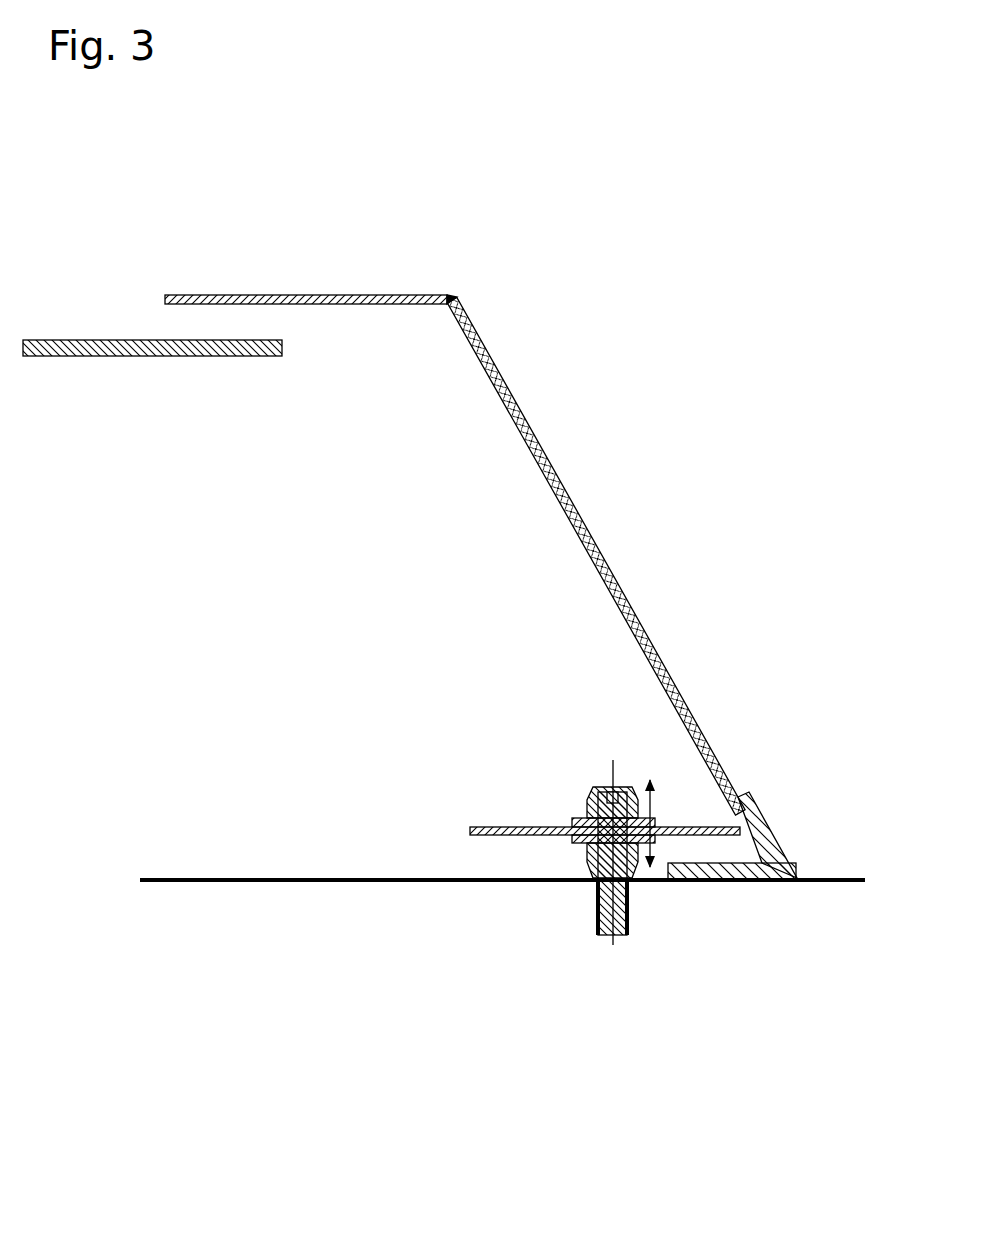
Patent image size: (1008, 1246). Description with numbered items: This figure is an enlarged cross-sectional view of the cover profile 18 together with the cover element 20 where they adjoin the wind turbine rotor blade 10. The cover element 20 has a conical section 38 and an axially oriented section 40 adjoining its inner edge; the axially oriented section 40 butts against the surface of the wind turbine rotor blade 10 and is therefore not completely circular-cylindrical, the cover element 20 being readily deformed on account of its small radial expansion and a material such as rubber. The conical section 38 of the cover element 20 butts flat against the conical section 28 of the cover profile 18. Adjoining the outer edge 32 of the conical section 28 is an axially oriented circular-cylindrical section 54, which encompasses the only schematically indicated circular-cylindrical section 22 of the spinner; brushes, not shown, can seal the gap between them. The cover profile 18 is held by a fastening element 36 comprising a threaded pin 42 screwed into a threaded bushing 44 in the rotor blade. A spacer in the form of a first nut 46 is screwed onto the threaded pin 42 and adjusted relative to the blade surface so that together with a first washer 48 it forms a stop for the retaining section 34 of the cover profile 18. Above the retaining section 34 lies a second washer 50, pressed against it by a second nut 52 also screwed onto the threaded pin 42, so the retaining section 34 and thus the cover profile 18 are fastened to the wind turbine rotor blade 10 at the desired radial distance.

The wind turbine rotor blade 10 is at (362, 928).
The cover profile 18 is at (464, 477).
The cover element 20 is at (770, 831).
The circular-cylindrical section of the spinner 22 is at (113, 356).
The conical section of the cover profile 28 is at (607, 570).
The outer edge 32 is at (447, 293).
The retaining section 34 is at (502, 826).
The fastening element 36 is at (559, 849).
The conical section of the cover element 38 is at (763, 811).
The axially oriented section 40 is at (733, 882).
The threaded pin 42 is at (608, 772).
The threaded bushing 44 is at (630, 935).
The first nut 46 is at (597, 872).
The first washer 48 is at (573, 845).
The second washer 50 is at (572, 818).
The second nut 52 is at (586, 808).
The circular-cylindrical section 54 is at (245, 295).